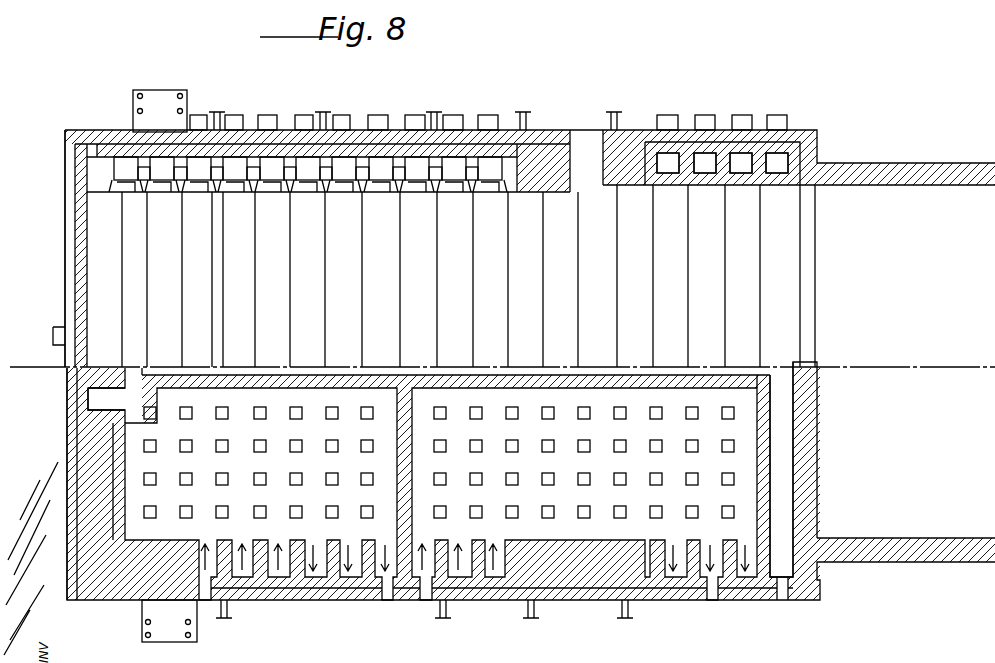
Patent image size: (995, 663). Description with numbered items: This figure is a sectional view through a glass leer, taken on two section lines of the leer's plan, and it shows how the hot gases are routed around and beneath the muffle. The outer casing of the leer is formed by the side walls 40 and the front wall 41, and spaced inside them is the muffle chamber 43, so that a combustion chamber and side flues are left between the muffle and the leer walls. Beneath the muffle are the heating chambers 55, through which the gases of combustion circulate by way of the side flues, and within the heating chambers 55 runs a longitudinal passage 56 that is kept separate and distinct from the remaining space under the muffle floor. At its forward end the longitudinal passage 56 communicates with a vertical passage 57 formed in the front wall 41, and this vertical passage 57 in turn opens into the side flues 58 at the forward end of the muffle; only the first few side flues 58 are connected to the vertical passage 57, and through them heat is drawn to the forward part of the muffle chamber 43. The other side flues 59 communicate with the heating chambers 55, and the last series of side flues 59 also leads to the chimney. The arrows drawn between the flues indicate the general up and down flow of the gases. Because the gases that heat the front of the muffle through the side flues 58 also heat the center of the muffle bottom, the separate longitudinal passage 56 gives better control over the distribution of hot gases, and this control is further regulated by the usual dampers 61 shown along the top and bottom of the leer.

The side walls 40 is at (298, 137).
The front wall 41 is at (66, 402).
The muffle chamber 43 is at (441, 276).
The heating chambers 55 is at (439, 462).
The longitudinal passage 56 is at (259, 366).
The vertical passage 57 is at (106, 400).
The side flues 58 is at (200, 170).
The side flues 59 is at (330, 180).
The dampers 61 is at (412, 118).